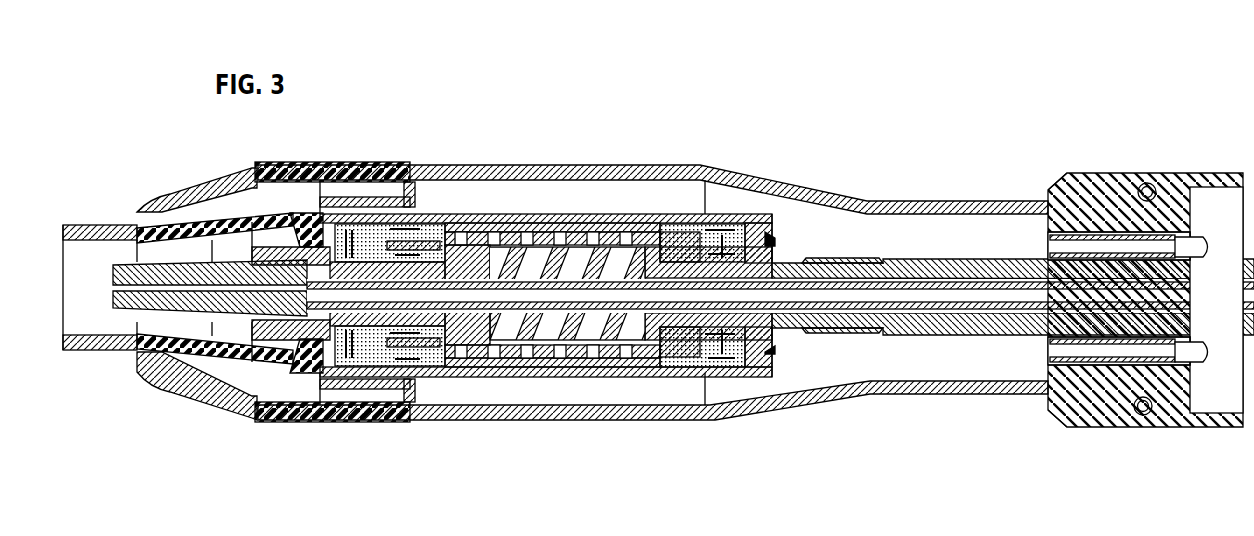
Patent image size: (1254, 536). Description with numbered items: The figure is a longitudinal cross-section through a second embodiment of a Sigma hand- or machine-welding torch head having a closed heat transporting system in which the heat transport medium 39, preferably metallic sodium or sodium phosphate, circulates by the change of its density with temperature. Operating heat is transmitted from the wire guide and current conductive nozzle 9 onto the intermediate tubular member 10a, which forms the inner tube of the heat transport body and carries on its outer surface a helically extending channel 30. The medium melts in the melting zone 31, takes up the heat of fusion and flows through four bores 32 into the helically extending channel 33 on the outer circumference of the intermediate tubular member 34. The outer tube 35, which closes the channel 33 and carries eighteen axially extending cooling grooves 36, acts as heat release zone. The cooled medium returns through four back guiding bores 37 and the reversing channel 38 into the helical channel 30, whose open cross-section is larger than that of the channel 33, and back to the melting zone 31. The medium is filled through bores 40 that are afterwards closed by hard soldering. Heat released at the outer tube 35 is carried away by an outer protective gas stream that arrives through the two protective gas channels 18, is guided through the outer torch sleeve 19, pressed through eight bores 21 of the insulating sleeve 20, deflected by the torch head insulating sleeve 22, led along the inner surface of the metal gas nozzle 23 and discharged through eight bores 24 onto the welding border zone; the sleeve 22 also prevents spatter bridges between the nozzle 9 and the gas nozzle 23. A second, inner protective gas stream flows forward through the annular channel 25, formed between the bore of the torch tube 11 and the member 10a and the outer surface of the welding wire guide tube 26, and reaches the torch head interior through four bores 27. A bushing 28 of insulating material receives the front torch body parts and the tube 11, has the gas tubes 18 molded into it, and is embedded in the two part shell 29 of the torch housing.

The wire guide and current conductive nozzle 9 is at (123, 270).
The intermediate tubular member 10a is at (830, 270).
The torch tube 11 is at (902, 263).
The protective gas channels 18 is at (1095, 352).
The outer torch sleeve 19 is at (695, 168).
The insulating sleeve 20 is at (330, 400).
The bores 21 is at (383, 400).
The torch head insulating sleeve 22 is at (232, 353).
The gas nozzle 23 is at (198, 190).
The bores 24 is at (147, 353).
The annular channel 25 is at (963, 290).
The welding wire guide tube 26 is at (942, 287).
The bores 27 is at (340, 222).
The bushing 28 is at (1068, 425).
The two part shell 29 is at (1050, 190).
The helically extending channel 30 is at (600, 267).
The melting zone 31 is at (398, 372).
The bores 32 is at (410, 225).
The helically extending channel 33 is at (567, 225).
The intermediate tubular member 34 is at (415, 245).
The outer tube 35 is at (540, 372).
The cooling grooves 36 is at (622, 372).
The back guiding bores 37 is at (733, 253).
The reversing channel 38 is at (735, 372).
The heat transport medium 39 is at (360, 366).
The bores 40 is at (728, 222).